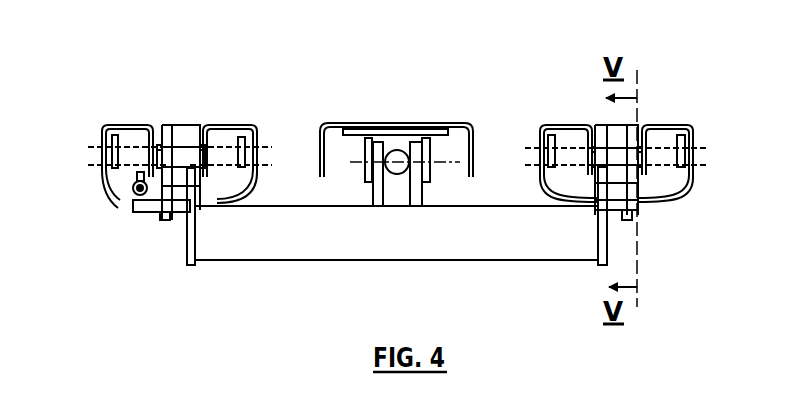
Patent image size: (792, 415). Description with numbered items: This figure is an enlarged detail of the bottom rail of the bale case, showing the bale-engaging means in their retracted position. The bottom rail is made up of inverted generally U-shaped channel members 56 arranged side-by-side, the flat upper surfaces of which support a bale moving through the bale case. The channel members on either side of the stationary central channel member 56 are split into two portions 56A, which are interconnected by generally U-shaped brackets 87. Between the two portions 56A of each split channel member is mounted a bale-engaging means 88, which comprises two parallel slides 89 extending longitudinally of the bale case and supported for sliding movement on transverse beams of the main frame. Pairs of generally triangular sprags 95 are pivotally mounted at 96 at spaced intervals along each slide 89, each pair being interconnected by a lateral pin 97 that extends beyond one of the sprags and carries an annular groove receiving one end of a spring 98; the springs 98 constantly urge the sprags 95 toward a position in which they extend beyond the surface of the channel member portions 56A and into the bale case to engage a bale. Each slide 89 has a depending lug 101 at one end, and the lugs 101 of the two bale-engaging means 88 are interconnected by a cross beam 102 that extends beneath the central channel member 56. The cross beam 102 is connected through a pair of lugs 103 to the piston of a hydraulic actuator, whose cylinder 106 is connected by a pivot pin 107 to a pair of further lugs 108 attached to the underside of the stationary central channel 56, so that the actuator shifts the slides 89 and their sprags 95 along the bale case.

The channel member 56 is at (473, 162).
The channel member portion 56A is at (112, 125).
The U-shaped bracket 87 is at (237, 187).
The bale-engaging means 88 is at (400, 142).
The slide 89 is at (175, 127).
The sprag 95 is at (195, 127).
The pivot 96 is at (158, 127).
The lateral pin 97 is at (152, 210).
The spring 98 is at (132, 195).
The depending lug 101 is at (187, 243).
The cross beam 102 is at (462, 252).
The lug 103 is at (408, 190).
The cylinder 106 is at (397, 150).
The pivot pin 107 is at (365, 163).
The further lug 108 is at (432, 153).